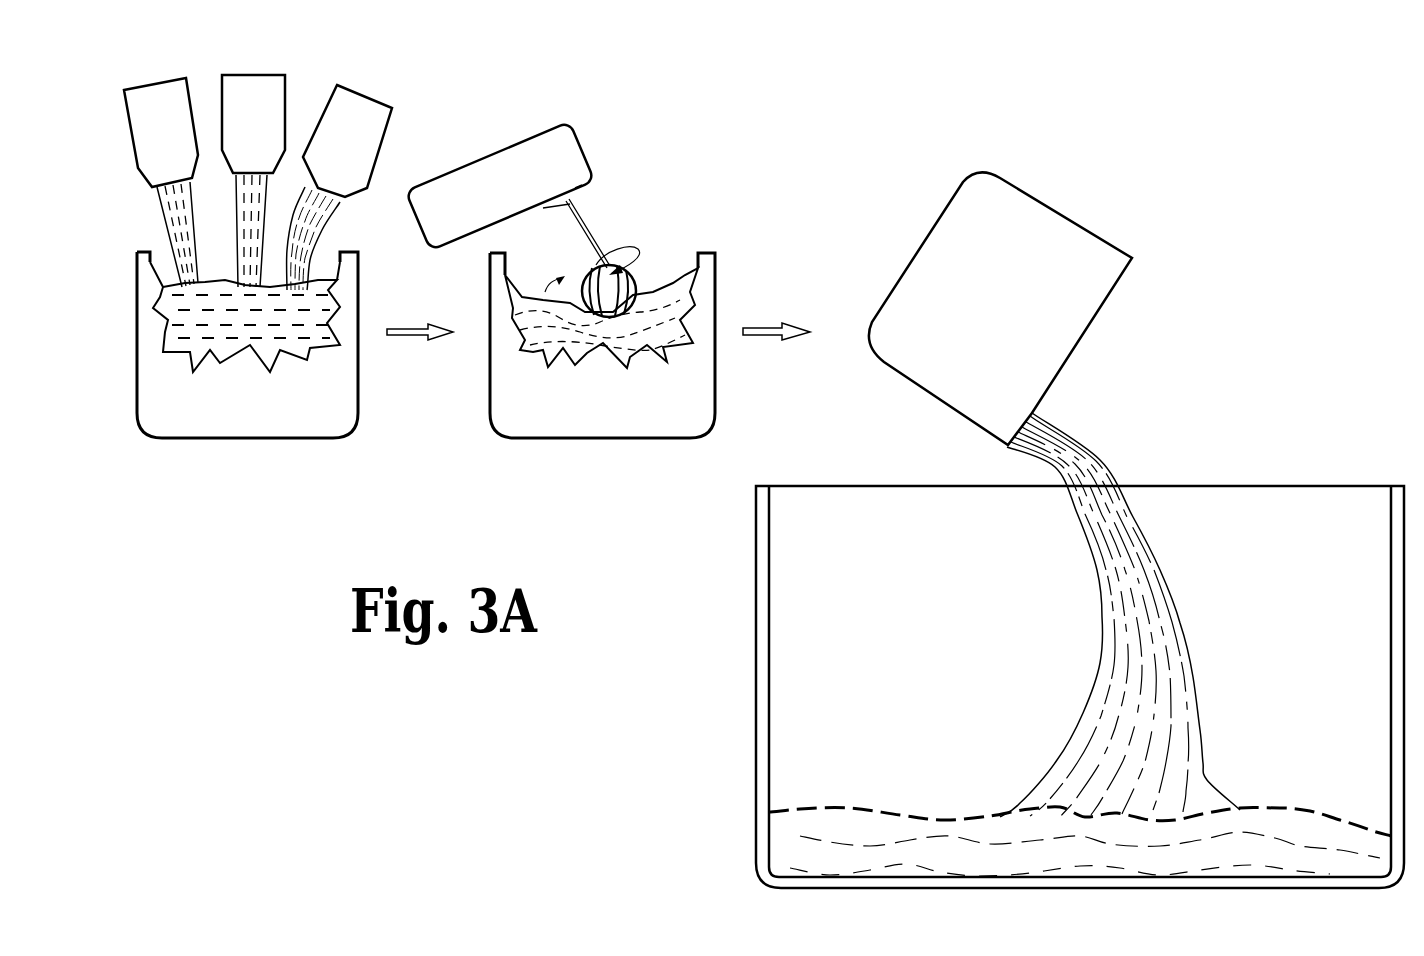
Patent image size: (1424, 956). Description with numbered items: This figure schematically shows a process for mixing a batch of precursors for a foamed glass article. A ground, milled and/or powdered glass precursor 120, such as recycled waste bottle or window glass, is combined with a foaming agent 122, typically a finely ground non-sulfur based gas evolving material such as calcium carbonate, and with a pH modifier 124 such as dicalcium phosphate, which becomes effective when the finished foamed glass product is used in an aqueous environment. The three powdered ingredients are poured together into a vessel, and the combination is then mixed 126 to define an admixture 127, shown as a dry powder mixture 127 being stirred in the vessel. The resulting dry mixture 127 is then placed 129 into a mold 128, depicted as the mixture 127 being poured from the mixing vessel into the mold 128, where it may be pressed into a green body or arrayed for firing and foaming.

The glass precursor 120 is at (176, 140).
The foaming agent 122 is at (268, 125).
The pH modifier 124 is at (358, 147).
The mixing 126 is at (429, 322).
The admixture 127 is at (673, 293).
The mold 128 is at (692, 733).
The placing 129 is at (786, 319).